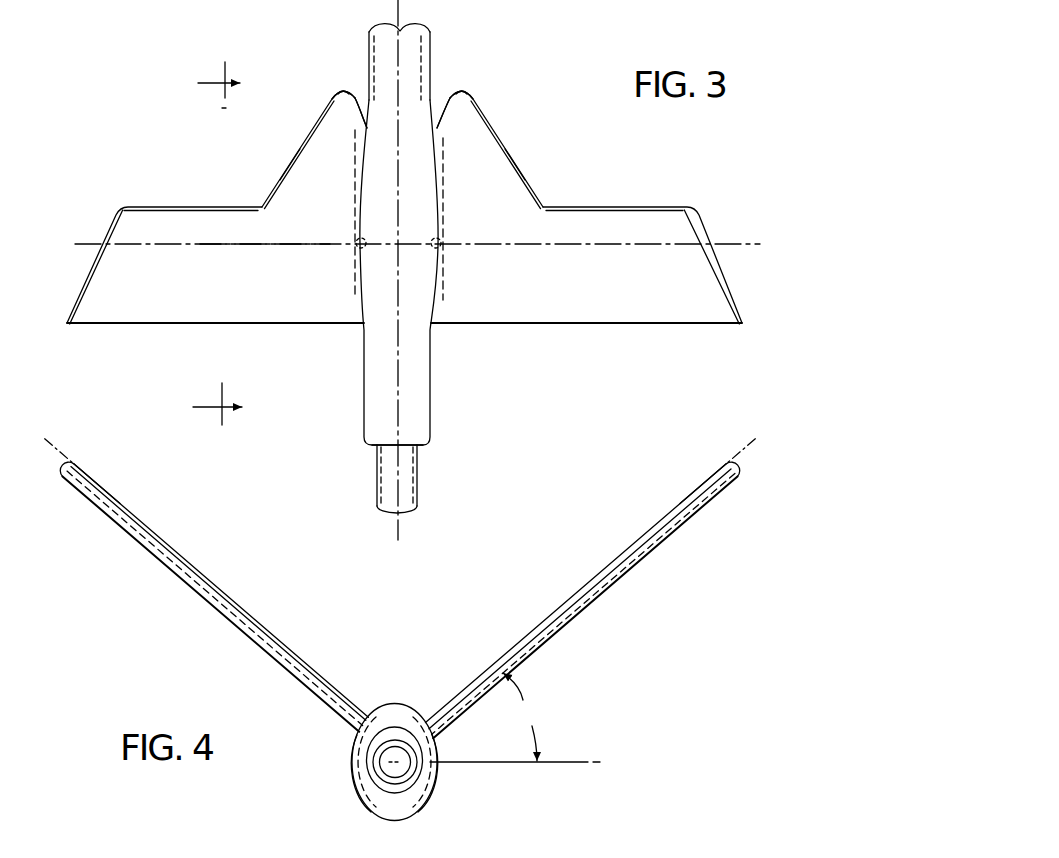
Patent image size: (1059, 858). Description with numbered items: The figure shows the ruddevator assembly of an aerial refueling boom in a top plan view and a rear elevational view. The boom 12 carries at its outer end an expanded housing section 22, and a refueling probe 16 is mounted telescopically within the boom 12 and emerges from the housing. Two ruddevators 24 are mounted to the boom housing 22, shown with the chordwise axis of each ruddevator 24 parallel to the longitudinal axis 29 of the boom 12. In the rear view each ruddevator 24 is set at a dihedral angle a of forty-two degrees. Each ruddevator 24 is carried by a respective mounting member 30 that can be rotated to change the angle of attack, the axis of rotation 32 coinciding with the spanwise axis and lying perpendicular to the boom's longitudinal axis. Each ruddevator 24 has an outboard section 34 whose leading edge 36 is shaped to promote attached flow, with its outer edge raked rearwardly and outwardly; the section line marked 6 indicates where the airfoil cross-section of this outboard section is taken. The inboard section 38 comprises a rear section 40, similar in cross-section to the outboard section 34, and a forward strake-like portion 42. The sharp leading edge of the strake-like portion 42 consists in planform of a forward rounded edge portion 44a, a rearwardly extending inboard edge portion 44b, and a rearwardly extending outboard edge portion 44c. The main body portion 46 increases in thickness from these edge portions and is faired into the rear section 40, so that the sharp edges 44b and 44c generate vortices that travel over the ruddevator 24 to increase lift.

In FIG. 3, the boom 12 is at (386, 50).
In FIG. 3, the refueling probe 16 is at (405, 486).
In FIG. 4, the refueling probe 16 is at (377, 767).
In FIG. 3, the expanded housing section 22 is at (386, 300).
In FIG. 4, the expanded housing section 22 is at (430, 787).
In FIG. 3, the ruddevator 24 is at (139, 330).
In FIG. 4, the ruddevator 24 is at (210, 573).
In FIG. 3, the longitudinal axis 29 is at (398, 409).
In FIG. 3, the mounting member 30 is at (356, 236).
In FIG. 4, the mounting member 30 is at (410, 705).
In FIG. 3, the axis of rotation 32 is at (286, 248).
In FIG. 4, the axis of rotation 32 is at (266, 638).
In FIG. 3, the outboard section 34 is at (104, 232).
In FIG. 4, the outboard section 34 is at (97, 480).
In FIG. 3, the leading edge 36 is at (173, 206).
In FIG. 3, the inboard section 38 is at (291, 331).
In FIG. 4, the inboard section 38 is at (327, 677).
In FIG. 3, the rear section 40 is at (180, 312).
In FIG. 3, the strake-like portion 42 is at (316, 93).
In FIG. 3, the forward rounded edge portion 44a is at (342, 90).
In FIG. 3, the inboard edge portion 44b is at (368, 146).
In FIG. 3, the outboard edge portion 44c is at (287, 162).
In FIG. 3, the main body portion 46 is at (331, 119).
In FIG. 3, the section line 6- 6 is at (220, 251).
In FIG. 4, the dihedral angle a is at (520, 717).